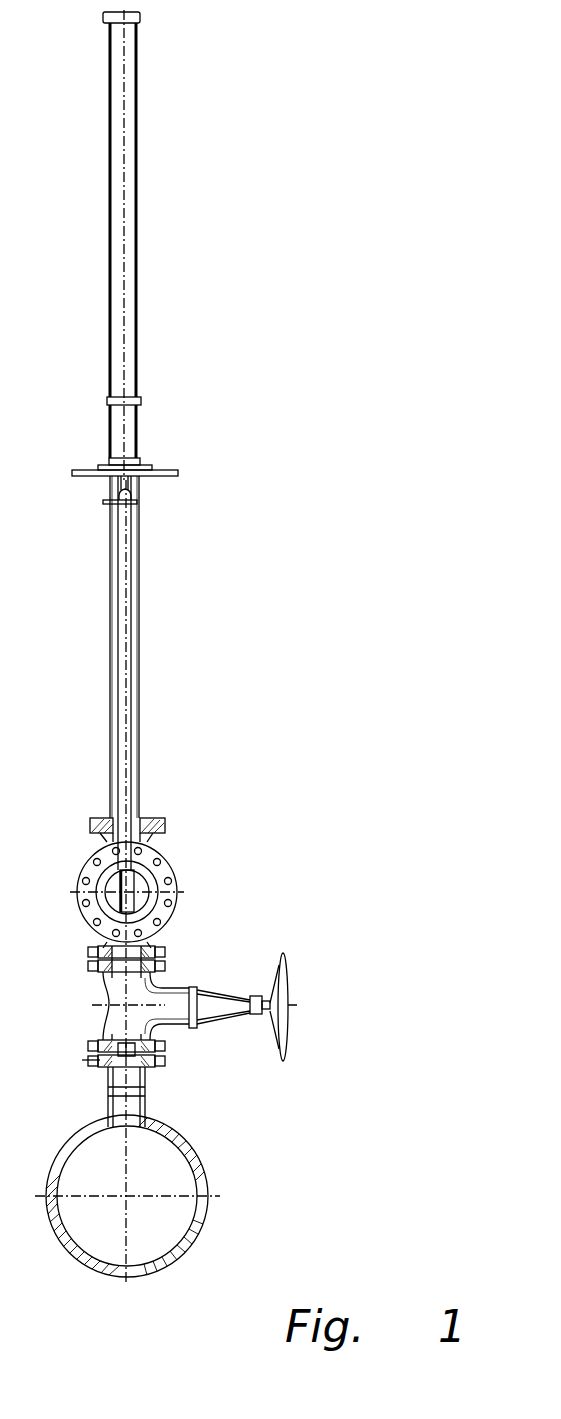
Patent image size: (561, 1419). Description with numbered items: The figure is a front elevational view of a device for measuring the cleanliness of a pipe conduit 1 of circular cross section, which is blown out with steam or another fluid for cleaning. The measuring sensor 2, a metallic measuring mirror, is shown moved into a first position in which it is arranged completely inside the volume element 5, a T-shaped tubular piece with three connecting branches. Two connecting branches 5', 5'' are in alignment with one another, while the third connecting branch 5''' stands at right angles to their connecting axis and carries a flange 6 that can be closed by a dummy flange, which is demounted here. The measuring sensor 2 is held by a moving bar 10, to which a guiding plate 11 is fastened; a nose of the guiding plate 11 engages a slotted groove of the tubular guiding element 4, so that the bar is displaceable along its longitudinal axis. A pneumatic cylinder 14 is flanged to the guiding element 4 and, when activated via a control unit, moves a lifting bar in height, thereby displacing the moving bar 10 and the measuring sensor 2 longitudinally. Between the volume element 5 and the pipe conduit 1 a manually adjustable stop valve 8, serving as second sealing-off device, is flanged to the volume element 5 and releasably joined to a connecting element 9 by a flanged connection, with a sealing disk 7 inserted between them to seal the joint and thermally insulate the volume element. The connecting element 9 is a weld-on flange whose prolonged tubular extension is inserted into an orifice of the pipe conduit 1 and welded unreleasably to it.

The pipe conduit 1 is at (202, 1213).
The measuring sensor 2 is at (128, 890).
The guiding element 4 is at (110, 637).
The volume element 5 is at (134, 895).
The first connecting branch 5' is at (149, 830).
The second connecting branch 5'' is at (156, 952).
The third connecting branch 5''' is at (205, 893).
The flange 6 is at (78, 892).
The sealing disk 7 is at (143, 1055).
The stop valve 8 is at (150, 1016).
The connecting element 9 is at (142, 1102).
The moving bar 10 is at (133, 592).
The guiding plate 11 is at (107, 504).
The pneumatic cylinder 14 is at (138, 247).